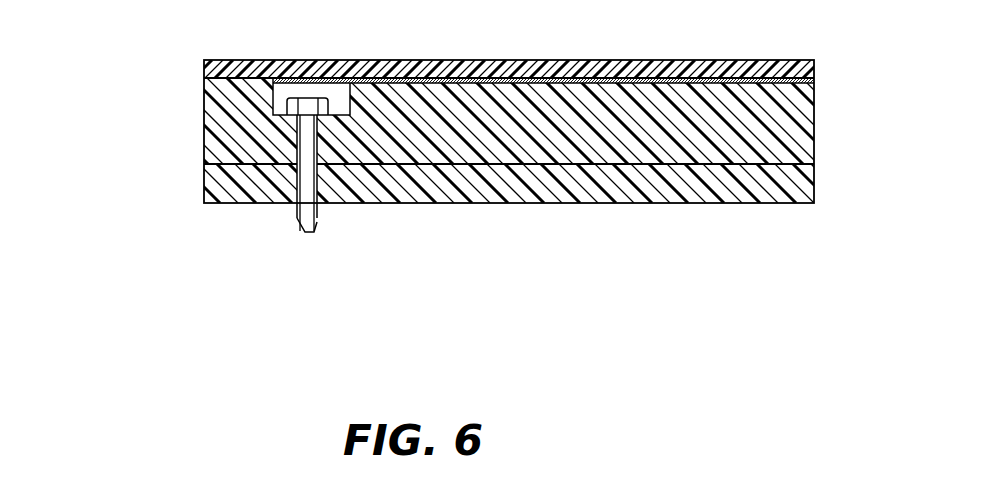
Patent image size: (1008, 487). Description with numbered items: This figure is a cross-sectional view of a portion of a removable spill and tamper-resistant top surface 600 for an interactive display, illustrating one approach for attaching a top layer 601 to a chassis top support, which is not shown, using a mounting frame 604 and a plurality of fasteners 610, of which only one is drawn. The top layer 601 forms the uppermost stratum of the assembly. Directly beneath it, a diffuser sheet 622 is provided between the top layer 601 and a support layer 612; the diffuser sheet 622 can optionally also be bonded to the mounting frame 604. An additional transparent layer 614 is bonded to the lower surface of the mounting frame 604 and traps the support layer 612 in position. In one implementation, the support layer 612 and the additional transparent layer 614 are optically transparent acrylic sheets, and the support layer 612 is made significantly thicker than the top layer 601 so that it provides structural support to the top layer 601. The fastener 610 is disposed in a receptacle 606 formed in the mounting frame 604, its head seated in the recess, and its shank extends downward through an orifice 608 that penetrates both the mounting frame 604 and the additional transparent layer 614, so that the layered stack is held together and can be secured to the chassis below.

The removable spill and tamper-resistant top surface 600 is at (248, 308).
The top layer 601 is at (204, 73).
The mounting frame 604 is at (204, 122).
The receptacle 606 is at (330, 90).
The orifice 608 is at (290, 152).
The fastener 610 is at (320, 222).
The support layer 612 is at (814, 127).
The additional transparent layer 614 is at (204, 200).
The diffuser sheet 622 is at (572, 79).